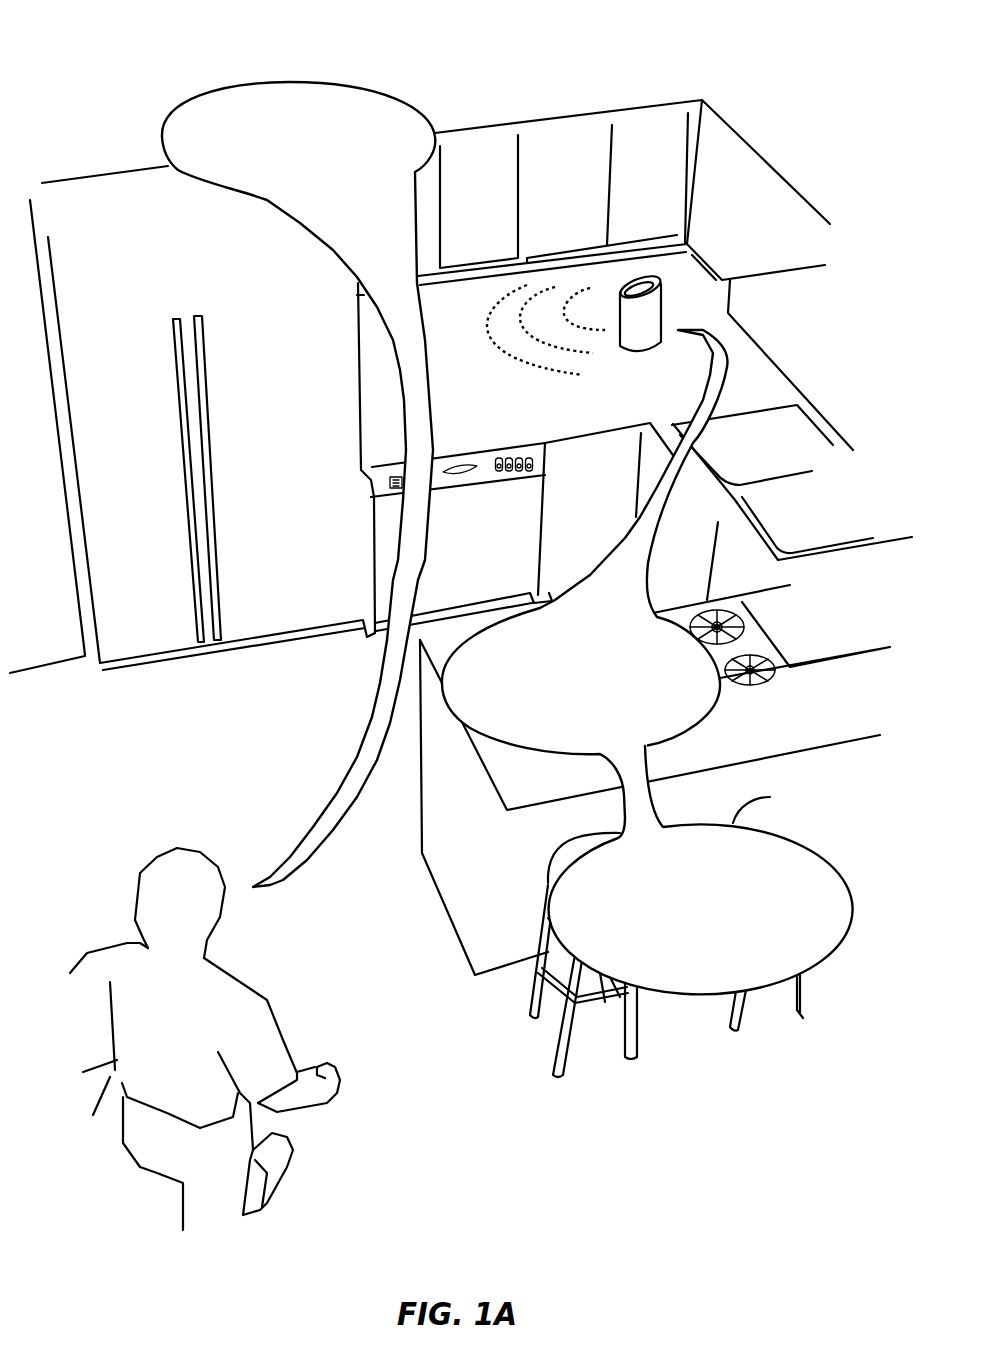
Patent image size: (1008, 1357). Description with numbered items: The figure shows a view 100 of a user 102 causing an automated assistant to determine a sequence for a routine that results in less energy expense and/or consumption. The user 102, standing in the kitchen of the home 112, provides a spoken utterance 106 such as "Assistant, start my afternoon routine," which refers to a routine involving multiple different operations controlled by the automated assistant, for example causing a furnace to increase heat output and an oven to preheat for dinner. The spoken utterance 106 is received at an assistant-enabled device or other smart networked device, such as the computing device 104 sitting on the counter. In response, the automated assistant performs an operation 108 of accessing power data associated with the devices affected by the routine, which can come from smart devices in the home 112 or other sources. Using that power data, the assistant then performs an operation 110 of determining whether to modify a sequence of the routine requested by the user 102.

The view 100 is at (148, 72).
The user 102 is at (199, 1022).
The computing device 104 is at (637, 352).
The spoken utterance 106 is at (210, 189).
The operation 108 is at (707, 705).
The operation 110 is at (816, 853).
The home 112 is at (538, 1157).